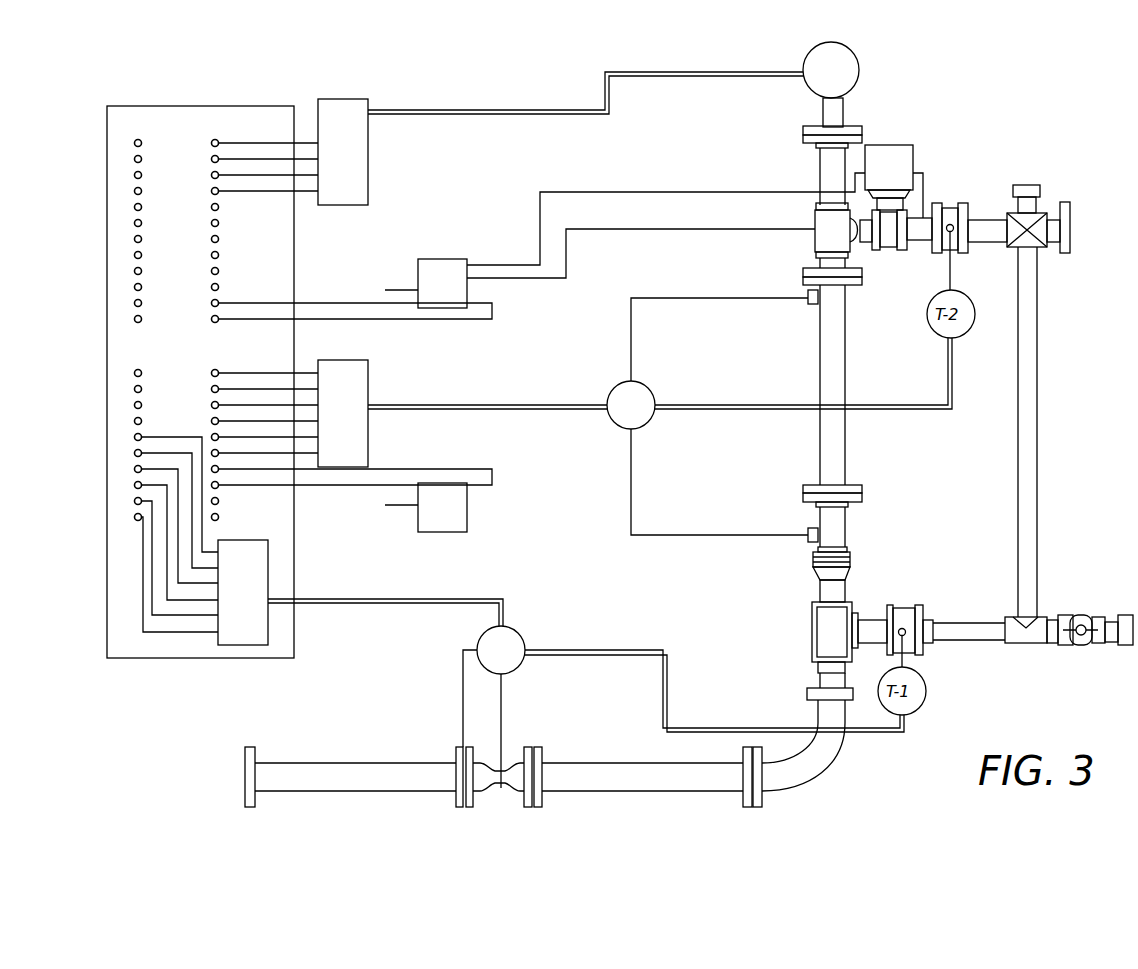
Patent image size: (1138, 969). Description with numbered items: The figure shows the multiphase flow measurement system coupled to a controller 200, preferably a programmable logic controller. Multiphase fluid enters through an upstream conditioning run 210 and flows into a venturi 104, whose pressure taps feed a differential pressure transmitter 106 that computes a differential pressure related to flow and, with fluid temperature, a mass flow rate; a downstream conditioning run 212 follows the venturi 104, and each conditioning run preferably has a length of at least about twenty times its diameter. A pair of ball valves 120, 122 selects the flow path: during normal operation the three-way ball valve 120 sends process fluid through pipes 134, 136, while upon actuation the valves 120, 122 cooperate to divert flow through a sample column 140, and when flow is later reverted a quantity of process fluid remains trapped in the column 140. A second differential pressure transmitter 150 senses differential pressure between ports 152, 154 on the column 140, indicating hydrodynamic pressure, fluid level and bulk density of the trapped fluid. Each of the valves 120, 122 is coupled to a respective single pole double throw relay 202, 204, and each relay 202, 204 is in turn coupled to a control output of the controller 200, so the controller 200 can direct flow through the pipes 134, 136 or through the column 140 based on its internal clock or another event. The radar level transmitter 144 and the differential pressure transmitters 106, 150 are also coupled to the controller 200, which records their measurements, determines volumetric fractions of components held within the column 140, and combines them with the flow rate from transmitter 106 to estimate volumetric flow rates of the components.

The controller 200 is at (204, 106).
The single pole double throw 120 VAC relay 202 is at (460, 532).
The single pole double throw 120 VAC relay 204 is at (446, 259).
The radar level transmitter 144 is at (812, 50).
The ball valve 122 is at (913, 160).
The sample column 140 is at (847, 472).
The pipe 136 is at (1040, 392).
The differential pressure transmitter 150 is at (637, 430).
The port 152 is at (808, 298).
The port 154 is at (808, 532).
The ball valve 120 is at (812, 628).
The pipe 134 is at (992, 617).
The differential pressure transmitter 106 is at (512, 670).
The venturi 104 is at (501, 790).
The conditioning run 210 is at (333, 792).
The conditioning run 212 is at (620, 792).